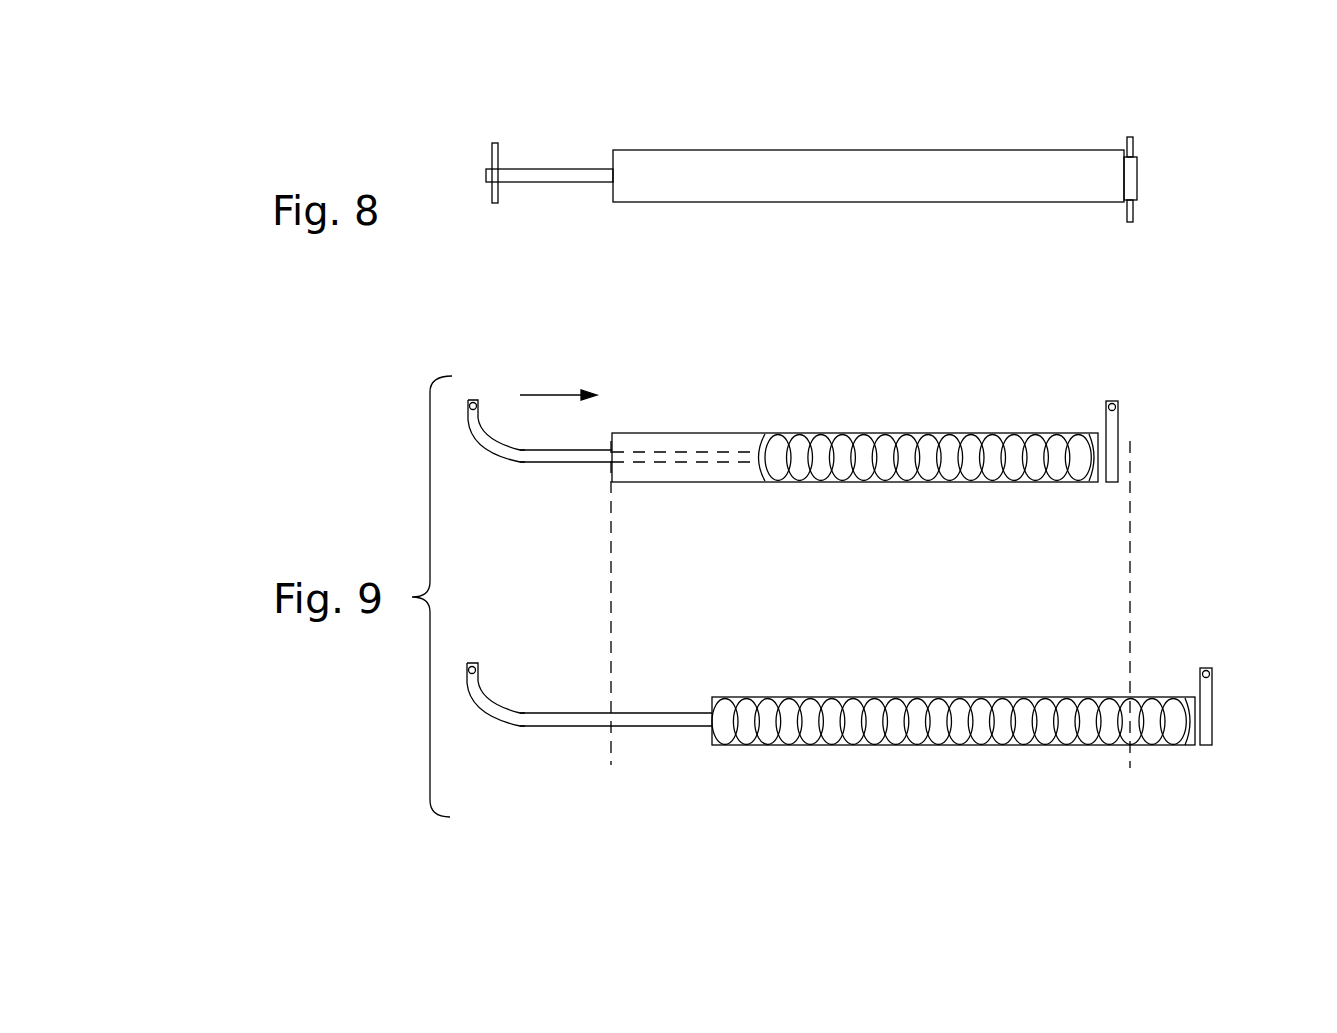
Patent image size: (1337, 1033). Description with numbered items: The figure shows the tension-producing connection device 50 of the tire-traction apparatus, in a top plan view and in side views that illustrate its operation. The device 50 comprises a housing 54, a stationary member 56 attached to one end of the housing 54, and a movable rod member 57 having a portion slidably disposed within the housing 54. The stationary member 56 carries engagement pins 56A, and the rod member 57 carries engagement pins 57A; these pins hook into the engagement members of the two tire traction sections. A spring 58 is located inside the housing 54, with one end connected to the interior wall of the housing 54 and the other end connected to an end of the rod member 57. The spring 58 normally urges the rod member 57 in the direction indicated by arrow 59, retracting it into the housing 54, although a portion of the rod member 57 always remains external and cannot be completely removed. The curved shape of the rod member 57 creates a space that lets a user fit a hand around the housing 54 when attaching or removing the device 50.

In FIG. 8, the tension-producing connection device 50 is at (883, 94).
In FIG. 9, the tension-producing connection device 50 is at (857, 550).
In FIG. 8, the housing 54 is at (715, 150).
In FIG. 9, the housing 54 is at (757, 433).
In FIG. 8, the stationary member 56 is at (1134, 180).
In FIG. 9, the stationary member 56 is at (1110, 475).
In FIG. 8, the engagement pins 56A is at (1125, 145).
In FIG. 9, the engagement pins 56A is at (1113, 410).
In FIG. 8, the rod member 57 is at (543, 168).
In FIG. 9, the rod member 57 is at (577, 462).
In FIG. 8, the engagement pins 57A is at (492, 162).
In FIG. 9, the engagement pins 57A is at (471, 412).
In FIG. 9, the spring 58 is at (957, 433).
In FIG. 9, the arrow 59 is at (545, 393).